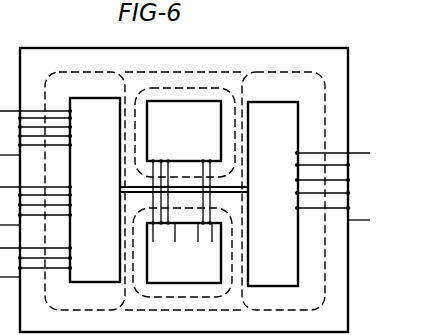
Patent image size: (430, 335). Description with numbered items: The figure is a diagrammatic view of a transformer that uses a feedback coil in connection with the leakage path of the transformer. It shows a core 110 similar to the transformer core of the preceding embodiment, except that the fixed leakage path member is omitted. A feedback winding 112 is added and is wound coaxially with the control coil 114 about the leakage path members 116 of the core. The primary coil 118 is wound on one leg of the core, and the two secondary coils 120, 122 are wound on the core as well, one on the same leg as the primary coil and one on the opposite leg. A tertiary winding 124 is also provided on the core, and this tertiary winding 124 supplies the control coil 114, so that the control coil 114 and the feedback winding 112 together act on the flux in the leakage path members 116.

The core 110 is at (323, 61).
The feedback winding 112 is at (203, 160).
The control coil 114 is at (161, 160).
The leakage path members 116 is at (238, 173).
The primary coil 118 is at (72, 128).
The secondary coil 120 is at (72, 195).
The secondary coil 122 is at (337, 152).
The tertiary winding 124 is at (72, 258).